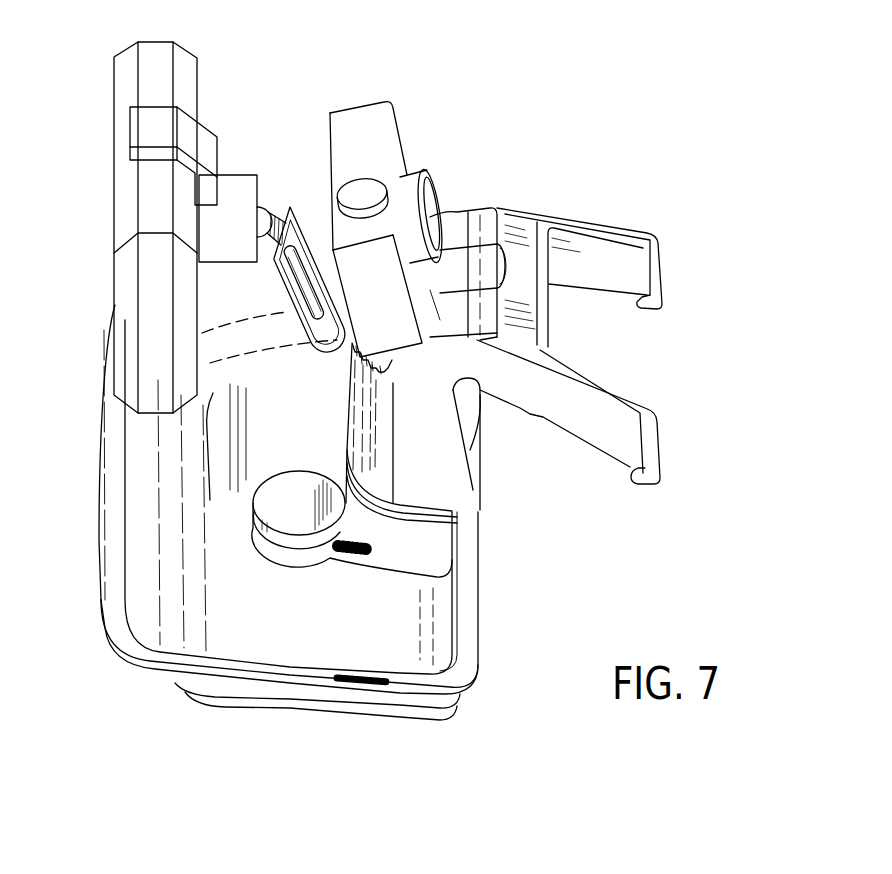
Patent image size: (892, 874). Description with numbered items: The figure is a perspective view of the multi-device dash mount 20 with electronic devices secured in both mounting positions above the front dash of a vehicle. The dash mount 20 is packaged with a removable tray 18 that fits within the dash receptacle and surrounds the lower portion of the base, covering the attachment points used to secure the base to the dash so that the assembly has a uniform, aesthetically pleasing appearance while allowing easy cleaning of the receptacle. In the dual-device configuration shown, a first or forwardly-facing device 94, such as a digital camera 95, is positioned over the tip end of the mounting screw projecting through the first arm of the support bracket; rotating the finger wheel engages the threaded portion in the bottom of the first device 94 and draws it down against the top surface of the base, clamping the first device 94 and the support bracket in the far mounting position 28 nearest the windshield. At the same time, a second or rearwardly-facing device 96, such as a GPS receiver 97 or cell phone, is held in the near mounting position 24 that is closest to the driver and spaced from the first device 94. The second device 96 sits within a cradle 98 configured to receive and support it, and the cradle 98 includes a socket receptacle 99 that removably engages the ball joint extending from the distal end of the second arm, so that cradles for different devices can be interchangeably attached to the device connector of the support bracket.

The tray 18 is at (478, 595).
The multi-device dash mount 20 is at (700, 188).
The near mounting position 24 is at (147, 430).
The far mounting position 28 is at (485, 172).
The first device 94 is at (453, 137).
The digital camera 95 is at (392, 112).
The second device 96 is at (118, 40).
The GPS receiver 97 is at (115, 82).
The cradle 98 is at (217, 147).
The socket receptacle 99 is at (267, 181).